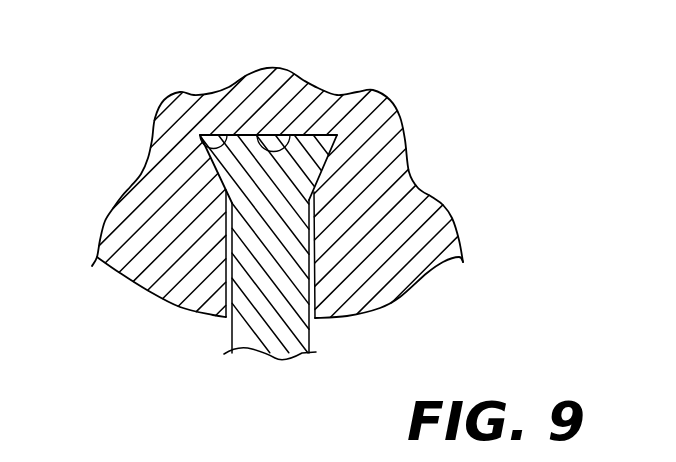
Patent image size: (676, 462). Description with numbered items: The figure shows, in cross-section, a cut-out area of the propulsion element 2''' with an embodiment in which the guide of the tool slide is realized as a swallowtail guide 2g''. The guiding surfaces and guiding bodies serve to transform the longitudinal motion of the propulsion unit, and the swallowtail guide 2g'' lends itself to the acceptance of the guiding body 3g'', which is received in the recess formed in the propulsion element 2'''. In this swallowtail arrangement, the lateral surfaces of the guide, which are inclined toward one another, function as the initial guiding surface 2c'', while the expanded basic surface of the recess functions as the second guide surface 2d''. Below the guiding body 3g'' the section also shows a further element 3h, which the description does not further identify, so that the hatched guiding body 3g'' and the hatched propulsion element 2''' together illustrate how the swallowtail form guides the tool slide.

The propulsion element 2''' is at (320, 193).
The swallowtail guide 2g'' is at (259, 95).
The second guide surface 2d'' is at (181, 146).
The initial guiding surface 2c'' is at (257, 220).
The guiding body 3g'' is at (333, 127).
The pin shank 3h is at (310, 332).